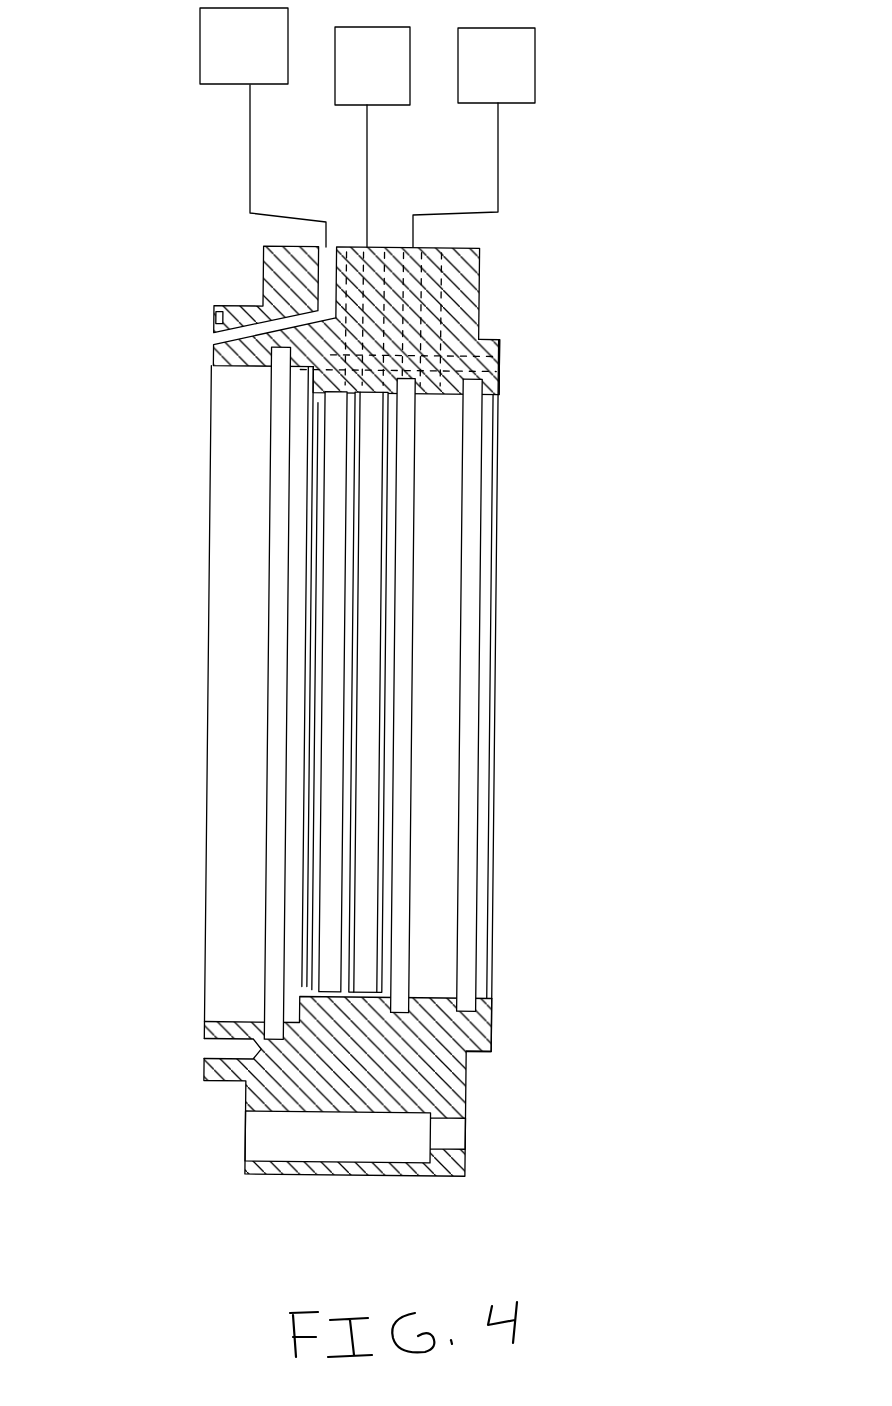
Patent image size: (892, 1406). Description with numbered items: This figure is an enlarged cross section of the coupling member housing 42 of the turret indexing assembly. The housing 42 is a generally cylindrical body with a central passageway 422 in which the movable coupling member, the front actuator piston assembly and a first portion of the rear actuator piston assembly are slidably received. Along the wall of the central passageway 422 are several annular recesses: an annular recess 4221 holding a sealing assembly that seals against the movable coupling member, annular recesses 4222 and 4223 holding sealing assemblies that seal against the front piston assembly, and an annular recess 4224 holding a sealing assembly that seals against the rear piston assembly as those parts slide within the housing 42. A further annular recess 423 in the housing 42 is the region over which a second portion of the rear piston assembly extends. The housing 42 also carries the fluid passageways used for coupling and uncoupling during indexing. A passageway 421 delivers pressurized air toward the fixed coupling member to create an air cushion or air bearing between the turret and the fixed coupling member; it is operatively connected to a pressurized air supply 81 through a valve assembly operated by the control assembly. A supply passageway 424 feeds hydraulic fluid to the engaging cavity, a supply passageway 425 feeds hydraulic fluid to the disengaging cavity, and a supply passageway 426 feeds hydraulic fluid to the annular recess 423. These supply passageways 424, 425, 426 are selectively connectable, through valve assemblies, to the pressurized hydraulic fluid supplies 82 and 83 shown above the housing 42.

The coupling member housing 42 is at (549, 201).
The passageway 421 is at (228, 331).
The central passageway 422 is at (237, 637).
The annular recess 4221 is at (283, 366).
The annular recess 4222 is at (338, 403).
The annular recess 4223 is at (415, 403).
The annular recess 4224 is at (485, 388).
The annular recess 423 is at (498, 357).
The supply passageway 424 is at (338, 247).
The supply passageway 425 is at (369, 247).
The supply passageway 426 is at (442, 357).
The pressurized air supply 81 is at (244, 46).
The pressurized hydraulic fluid supply 82 is at (372, 66).
The pressurized hydraulic fluid supply 83 is at (474, 137).